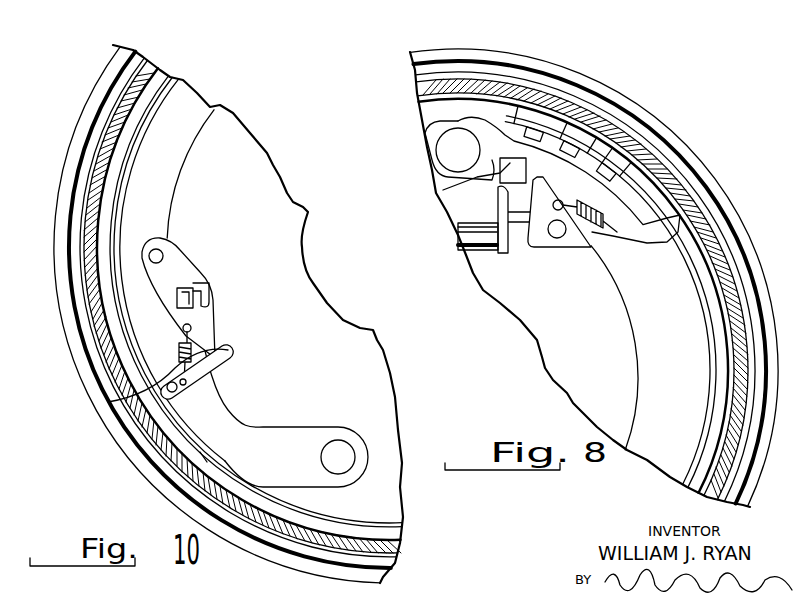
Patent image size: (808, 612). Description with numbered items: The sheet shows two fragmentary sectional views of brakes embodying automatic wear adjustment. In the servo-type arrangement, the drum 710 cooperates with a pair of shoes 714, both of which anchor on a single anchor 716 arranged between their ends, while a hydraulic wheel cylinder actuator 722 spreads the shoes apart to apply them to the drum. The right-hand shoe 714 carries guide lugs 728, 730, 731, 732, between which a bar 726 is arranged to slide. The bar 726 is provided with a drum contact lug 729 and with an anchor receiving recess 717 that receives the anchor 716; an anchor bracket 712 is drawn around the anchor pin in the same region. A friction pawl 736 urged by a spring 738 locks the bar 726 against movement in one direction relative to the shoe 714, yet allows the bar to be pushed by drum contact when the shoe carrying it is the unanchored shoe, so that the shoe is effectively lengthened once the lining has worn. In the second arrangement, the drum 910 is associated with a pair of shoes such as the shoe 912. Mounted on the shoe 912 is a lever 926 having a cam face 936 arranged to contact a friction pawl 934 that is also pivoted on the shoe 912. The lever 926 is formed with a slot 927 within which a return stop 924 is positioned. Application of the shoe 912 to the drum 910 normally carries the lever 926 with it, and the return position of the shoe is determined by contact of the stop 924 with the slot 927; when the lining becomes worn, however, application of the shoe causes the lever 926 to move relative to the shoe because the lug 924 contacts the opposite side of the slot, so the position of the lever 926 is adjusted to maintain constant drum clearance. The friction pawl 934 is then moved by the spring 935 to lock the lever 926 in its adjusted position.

In FIG. 10, the drum 910 is at (90, 243).
In FIG. 10, the shoe 912 is at (178, 165).
In FIG. 10, the lever 926 is at (178, 267).
In FIG. 10, the return stop 924 is at (196, 283).
In FIG. 10, the slot 927 is at (203, 308).
In FIG. 10, the cam face 936 is at (192, 344).
In FIG. 10, the friction pawl 934 is at (213, 375).
In FIG. 10, the spring 935 is at (108, 401).
In FIG. 8, the drum 710 is at (683, 202).
In FIG. 8, the shoe 714 is at (690, 258).
In FIG. 8, the bar 726 is at (618, 200).
In FIG. 8, the drum contact lug 729 is at (667, 240).
In FIG. 8, the anchor 716 is at (448, 140).
In FIG. 8, the anchor bracket 712 is at (432, 144).
In FIG. 8, the anchor receiving recess 717 is at (443, 192).
In FIG. 8, the hydraulic wheel cylinder actuator 722 is at (455, 212).
In FIG. 8, the guide lug 728 is at (458, 248).
In FIG. 8, the guide lug 730 is at (555, 118).
In FIG. 8, the guide lug 731 is at (585, 135).
In FIG. 8, the guide lug 732 is at (615, 158).
In FIG. 8, the friction pawl 736 is at (532, 248).
In FIG. 8, the spring 738 is at (588, 248).